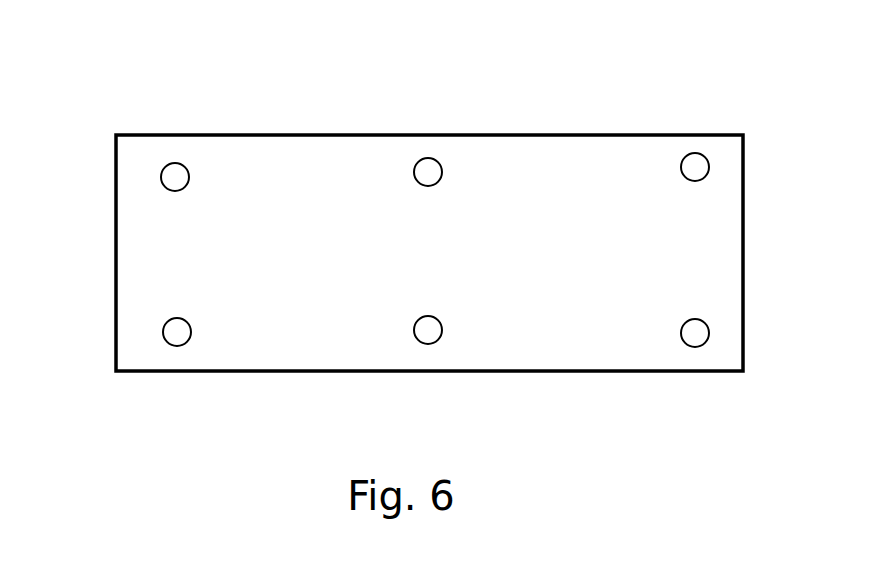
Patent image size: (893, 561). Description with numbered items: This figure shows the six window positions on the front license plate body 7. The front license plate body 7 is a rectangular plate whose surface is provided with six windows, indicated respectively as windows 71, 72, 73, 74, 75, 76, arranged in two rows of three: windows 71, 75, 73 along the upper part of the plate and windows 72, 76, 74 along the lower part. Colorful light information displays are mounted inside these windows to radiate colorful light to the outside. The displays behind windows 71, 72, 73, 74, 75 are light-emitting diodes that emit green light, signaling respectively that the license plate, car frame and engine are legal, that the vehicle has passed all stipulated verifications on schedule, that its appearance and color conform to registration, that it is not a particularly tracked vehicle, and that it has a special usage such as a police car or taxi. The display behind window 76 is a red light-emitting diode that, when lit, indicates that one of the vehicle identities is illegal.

The front license plate body 7 is at (310, 233).
The window 71 is at (155, 170).
The window 72 is at (163, 345).
The window 73 is at (710, 150).
The window 74 is at (708, 347).
The window 75 is at (450, 163).
The window 76 is at (432, 347).